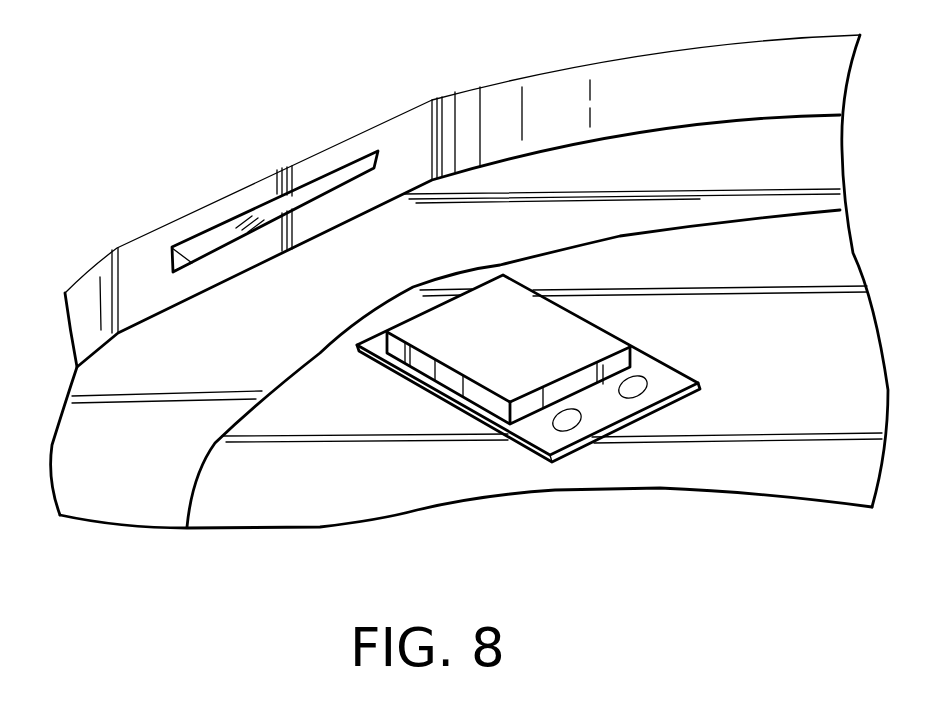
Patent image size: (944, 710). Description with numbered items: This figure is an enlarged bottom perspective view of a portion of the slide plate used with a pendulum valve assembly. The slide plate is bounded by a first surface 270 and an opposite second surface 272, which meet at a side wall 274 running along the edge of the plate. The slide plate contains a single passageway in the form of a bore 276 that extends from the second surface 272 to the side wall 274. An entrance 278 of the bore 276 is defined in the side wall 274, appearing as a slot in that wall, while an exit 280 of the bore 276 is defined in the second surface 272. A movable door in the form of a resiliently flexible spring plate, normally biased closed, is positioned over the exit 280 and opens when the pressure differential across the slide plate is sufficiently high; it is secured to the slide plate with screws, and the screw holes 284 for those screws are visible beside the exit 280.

The first surface 270 is at (650, 50).
The second surface 272 is at (252, 507).
The side wall 274 is at (400, 132).
The bore 276 is at (330, 152).
The entrance 278 is at (267, 212).
The exit 280 is at (435, 388).
The screw holes 284 is at (565, 420).